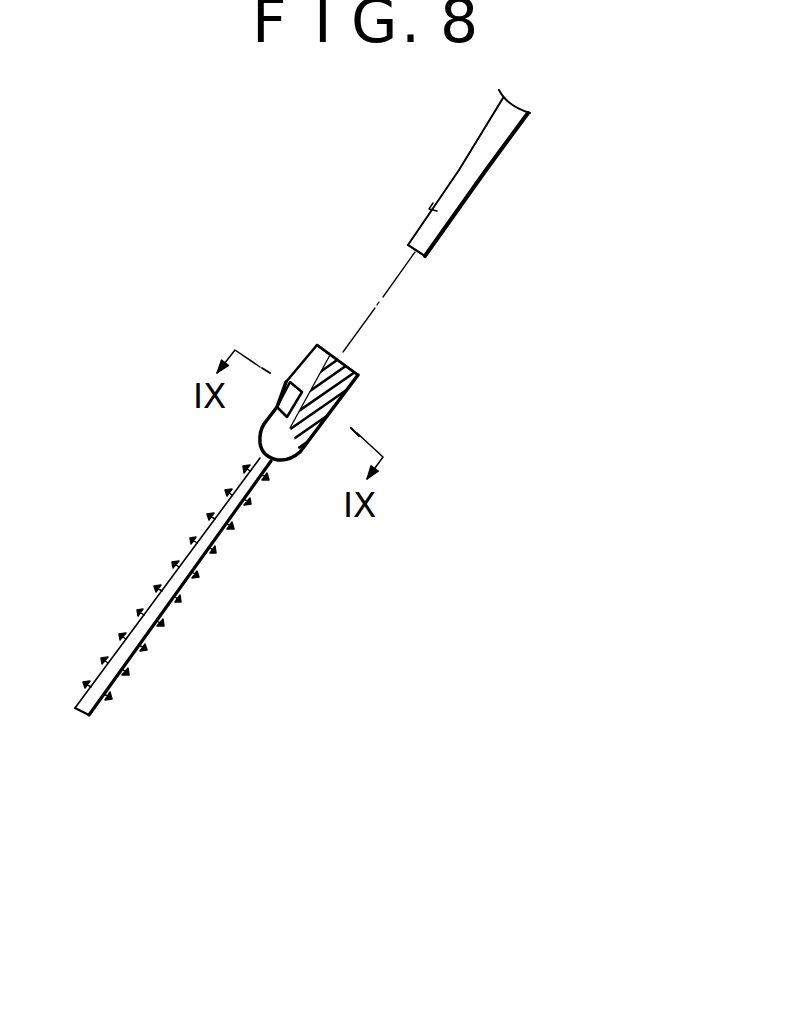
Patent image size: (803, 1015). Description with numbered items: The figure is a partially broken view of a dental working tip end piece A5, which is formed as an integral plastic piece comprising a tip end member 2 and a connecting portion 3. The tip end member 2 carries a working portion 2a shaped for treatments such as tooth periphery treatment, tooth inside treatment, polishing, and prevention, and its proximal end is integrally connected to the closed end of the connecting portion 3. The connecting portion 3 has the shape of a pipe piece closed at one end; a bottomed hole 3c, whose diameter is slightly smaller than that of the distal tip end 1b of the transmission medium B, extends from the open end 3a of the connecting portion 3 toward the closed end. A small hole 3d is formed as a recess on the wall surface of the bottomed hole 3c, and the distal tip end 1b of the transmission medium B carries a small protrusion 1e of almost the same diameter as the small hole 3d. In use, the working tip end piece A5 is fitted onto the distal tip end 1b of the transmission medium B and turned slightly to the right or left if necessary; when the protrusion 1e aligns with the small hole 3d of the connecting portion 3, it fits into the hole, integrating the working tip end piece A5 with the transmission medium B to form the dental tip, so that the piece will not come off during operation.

The distal tip end 1b is at (458, 196).
The small protrusion 1e is at (433, 204).
The transmission medium B is at (543, 140).
The connecting portion 3 is at (298, 455).
The one end of the connecting portion 3a is at (340, 353).
The bottomed hole 3c is at (313, 352).
The small hole 3d is at (290, 387).
The tip end member 2 is at (183, 585).
The working portion 2a is at (110, 680).
The dental working tip end piece A5 is at (408, 557).